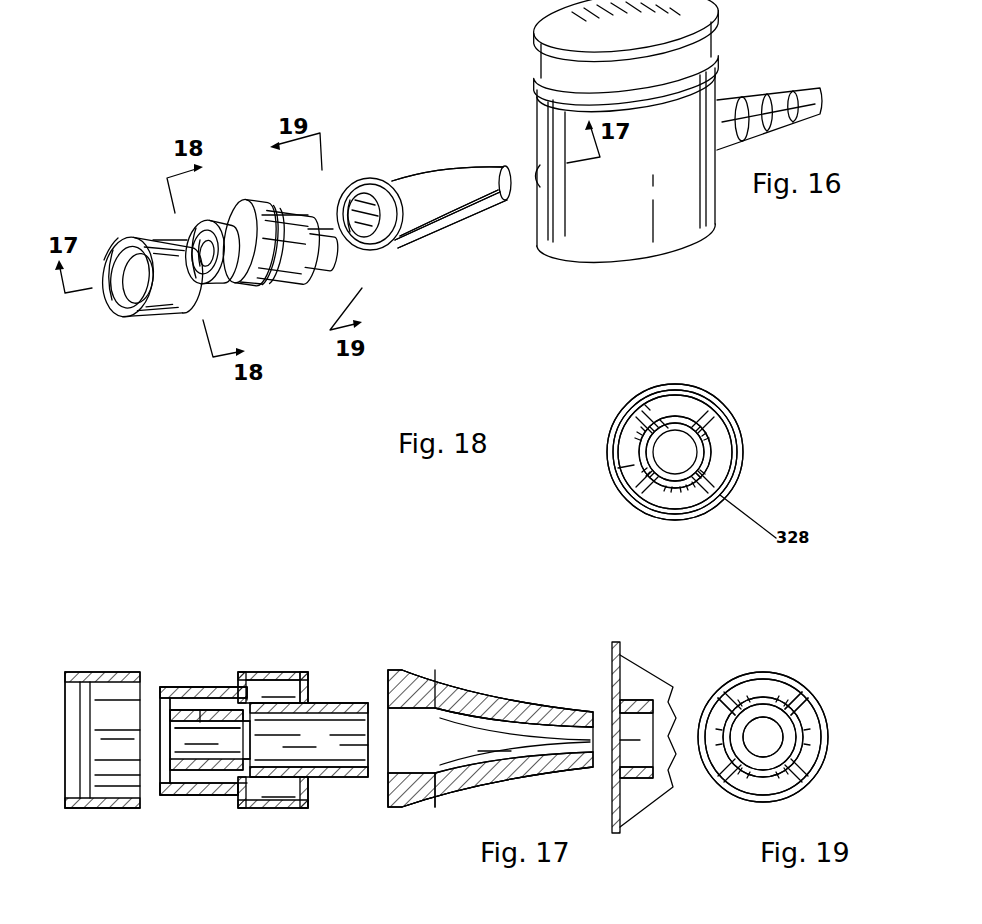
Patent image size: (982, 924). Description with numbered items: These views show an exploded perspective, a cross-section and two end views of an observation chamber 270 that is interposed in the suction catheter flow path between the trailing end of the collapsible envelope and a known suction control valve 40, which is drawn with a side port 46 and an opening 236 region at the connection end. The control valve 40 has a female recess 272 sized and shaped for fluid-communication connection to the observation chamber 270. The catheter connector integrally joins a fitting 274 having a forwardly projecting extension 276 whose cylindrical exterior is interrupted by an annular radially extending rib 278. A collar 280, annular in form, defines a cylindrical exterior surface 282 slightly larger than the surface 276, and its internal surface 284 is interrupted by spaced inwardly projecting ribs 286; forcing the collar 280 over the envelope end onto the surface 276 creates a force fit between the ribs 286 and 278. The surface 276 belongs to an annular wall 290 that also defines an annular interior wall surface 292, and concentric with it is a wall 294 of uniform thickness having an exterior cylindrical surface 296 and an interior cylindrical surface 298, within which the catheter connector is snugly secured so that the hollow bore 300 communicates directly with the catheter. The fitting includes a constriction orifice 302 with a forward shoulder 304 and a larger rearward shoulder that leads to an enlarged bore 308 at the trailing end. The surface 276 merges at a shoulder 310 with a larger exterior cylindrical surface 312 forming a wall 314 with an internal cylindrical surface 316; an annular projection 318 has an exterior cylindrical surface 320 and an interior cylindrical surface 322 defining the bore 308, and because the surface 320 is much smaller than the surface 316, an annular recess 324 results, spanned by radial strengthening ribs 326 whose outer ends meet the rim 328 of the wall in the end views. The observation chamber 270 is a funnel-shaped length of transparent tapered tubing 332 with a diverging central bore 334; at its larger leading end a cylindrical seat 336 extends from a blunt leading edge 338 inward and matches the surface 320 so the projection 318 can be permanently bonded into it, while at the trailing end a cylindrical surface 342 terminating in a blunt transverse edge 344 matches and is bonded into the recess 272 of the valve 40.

In FIG. 16, the suction control valve 40 is at (582, 238).
In FIG. 17, the suction control valve 40 is at (608, 657).
In FIG. 16, the spout 46 is at (728, 100).
In FIG. 16, the nozzle opening 236 is at (352, 200).
In FIG. 16, the observation chamber 270 is at (424, 175).
In FIG. 16, the female recess 272 is at (538, 184).
In FIG. 17, the female recess 272 is at (632, 700).
In FIG. 16, the fitting 274 is at (210, 208).
In FIG. 16, the forwardly projecting extension 276 is at (250, 292).
In FIG. 18, the forwardly projecting extension 276 is at (660, 415).
In FIG. 17, the forwardly projecting extension 276 is at (188, 795).
In FIG. 19, the forwardly projecting extension 276 is at (795, 710).
In FIG. 16, the annular radially extending rib 278 is at (220, 222).
In FIG. 18, the annular radially extending rib 278 is at (642, 402).
In FIG. 17, the annular radially extending rib 278 is at (160, 687).
In FIG. 16, the collar 280 is at (160, 315).
In FIG. 16, the cylindrical exterior surface 282 is at (152, 236).
In FIG. 17, the cylindrical exterior surface 282 is at (108, 808).
In FIG. 16, the internal surface 284 is at (135, 320).
In FIG. 17, the internal surface 284 is at (108, 672).
In FIG. 16, the spaced ribs 286 is at (113, 248).
In FIG. 17, the spaced ribs 286 is at (67, 672).
In FIG. 17, the annular wall 290 is at (202, 705).
In FIG. 18, the annular interior wall surface 292 is at (625, 434).
In FIG. 17, the annular interior wall surface 292 is at (203, 795).
In FIG. 16, the wall 294 is at (195, 290).
In FIG. 18, the wall 294 is at (625, 478).
In FIG. 17, the wall 294 is at (182, 690).
In FIG. 18, the exterior cylindrical surface 296 is at (618, 468).
In FIG. 17, the exterior cylindrical surface 296 is at (178, 712).
In FIG. 18, the interior cylindrical surface 298 is at (705, 470).
In FIG. 17, the interior cylindrical surface 298 is at (215, 700).
In FIG. 18, the hollow bore 300 is at (700, 430).
In FIG. 17, the hollow bore 300 is at (236, 668).
In FIG. 17, the constriction orifice 302 is at (252, 780).
In FIG. 18, the forward shoulder 304 is at (683, 420).
In FIG. 17, the forward shoulder 304 is at (246, 785).
In FIG. 17, the enlarged bore 308 is at (262, 672).
In FIG. 16, the shoulder 310 is at (248, 284).
In FIG. 17, the shoulder 310 is at (235, 795).
In FIG. 16, the exterior cylindrical surface 312 is at (282, 205).
In FIG. 17, the exterior cylindrical surface 312 is at (275, 675).
In FIG. 19, the exterior cylindrical surface 312 is at (750, 700).
In FIG. 17, the wall 314 is at (292, 672).
In FIG. 19, the wall 314 is at (770, 700).
In FIG. 17, the internal cylindrical surface 316 is at (306, 690).
In FIG. 19, the internal cylindrical surface 316 is at (740, 790).
In FIG. 17, the annular projection 318 is at (325, 703).
In FIG. 19, the annular projection 318 is at (738, 700).
In FIG. 16, the exterior cylindrical surface 320 is at (320, 262).
In FIG. 17, the exterior cylindrical surface 320 is at (345, 705).
In FIG. 19, the exterior cylindrical surface 320 is at (760, 705).
In FIG. 17, the interior cylindrical surface 322 is at (315, 800).
In FIG. 19, the interior cylindrical surface 322 is at (800, 725).
In FIG. 17, the annular recess 324 is at (302, 790).
In FIG. 18, the radial strengthening ribs 326 is at (715, 488).
In FIG. 17, the radial strengthening ribs 326 is at (273, 740).
In FIG. 19, the radial strengthening ribs 326 is at (708, 700).
In FIG. 18, the outer rim 328 is at (620, 422).
In FIG. 19, the outer rim 328 is at (783, 690).
In FIG. 16, the transparent tubing 332 is at (435, 228).
In FIG. 17, the transparent tubing 332 is at (462, 712).
In FIG. 17, the central bore 334 is at (420, 790).
In FIG. 17, the cylindrical seat 336 is at (418, 790).
In FIG. 16, the blunt leading edge 338 is at (378, 245).
In FIG. 17, the blunt leading edge 338 is at (390, 800).
In FIG. 16, the cylindrical surface 342 is at (500, 200).
In FIG. 17, the cylindrical surface 342 is at (525, 705).
In FIG. 16, the blunt transverse edge 344 is at (508, 195).
In FIG. 17, the blunt transverse edge 344 is at (588, 768).